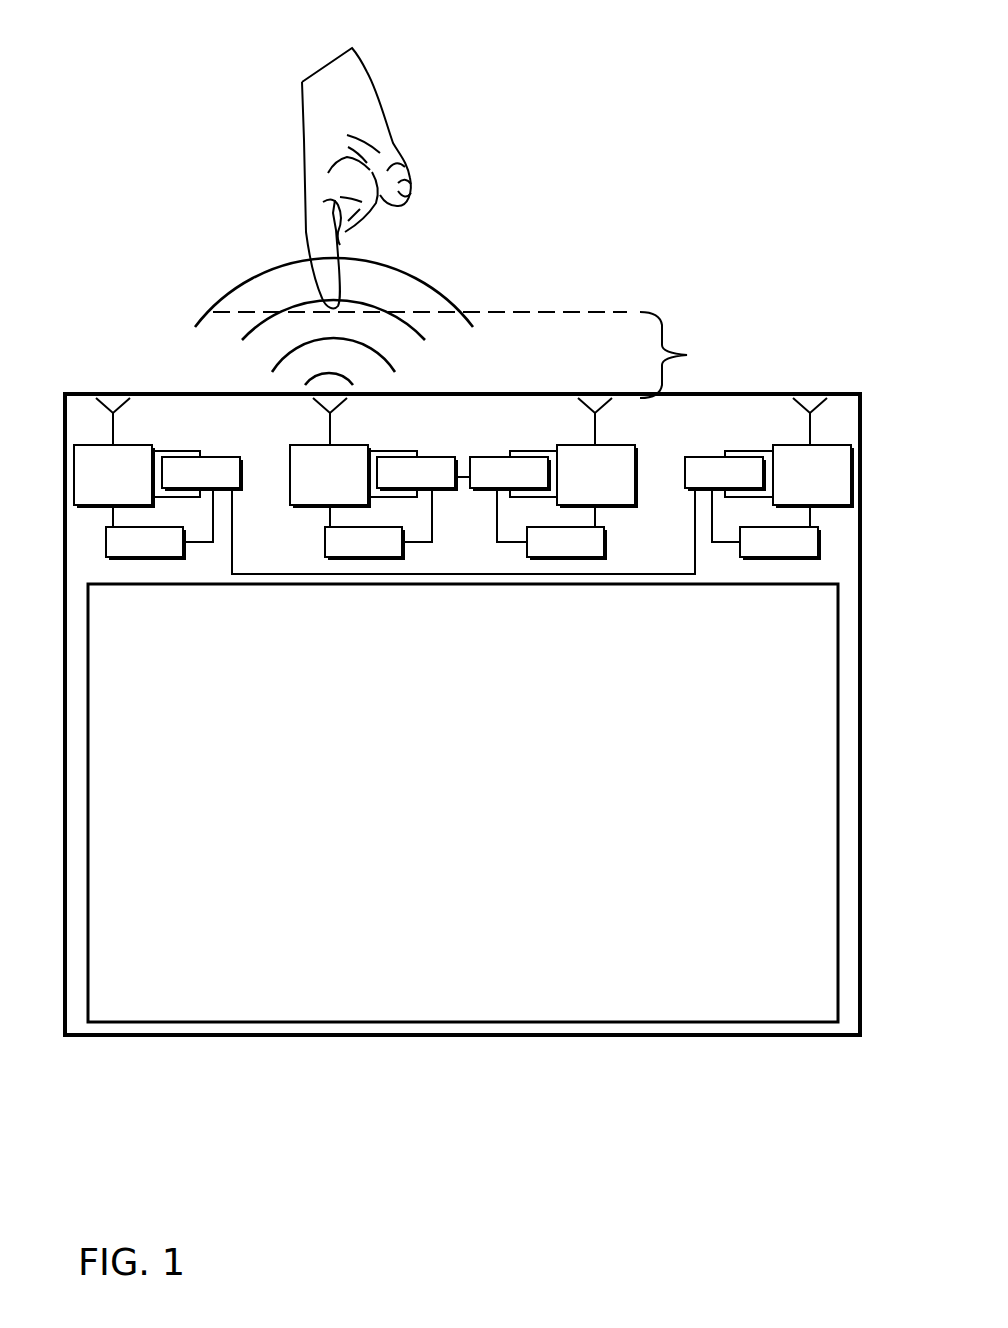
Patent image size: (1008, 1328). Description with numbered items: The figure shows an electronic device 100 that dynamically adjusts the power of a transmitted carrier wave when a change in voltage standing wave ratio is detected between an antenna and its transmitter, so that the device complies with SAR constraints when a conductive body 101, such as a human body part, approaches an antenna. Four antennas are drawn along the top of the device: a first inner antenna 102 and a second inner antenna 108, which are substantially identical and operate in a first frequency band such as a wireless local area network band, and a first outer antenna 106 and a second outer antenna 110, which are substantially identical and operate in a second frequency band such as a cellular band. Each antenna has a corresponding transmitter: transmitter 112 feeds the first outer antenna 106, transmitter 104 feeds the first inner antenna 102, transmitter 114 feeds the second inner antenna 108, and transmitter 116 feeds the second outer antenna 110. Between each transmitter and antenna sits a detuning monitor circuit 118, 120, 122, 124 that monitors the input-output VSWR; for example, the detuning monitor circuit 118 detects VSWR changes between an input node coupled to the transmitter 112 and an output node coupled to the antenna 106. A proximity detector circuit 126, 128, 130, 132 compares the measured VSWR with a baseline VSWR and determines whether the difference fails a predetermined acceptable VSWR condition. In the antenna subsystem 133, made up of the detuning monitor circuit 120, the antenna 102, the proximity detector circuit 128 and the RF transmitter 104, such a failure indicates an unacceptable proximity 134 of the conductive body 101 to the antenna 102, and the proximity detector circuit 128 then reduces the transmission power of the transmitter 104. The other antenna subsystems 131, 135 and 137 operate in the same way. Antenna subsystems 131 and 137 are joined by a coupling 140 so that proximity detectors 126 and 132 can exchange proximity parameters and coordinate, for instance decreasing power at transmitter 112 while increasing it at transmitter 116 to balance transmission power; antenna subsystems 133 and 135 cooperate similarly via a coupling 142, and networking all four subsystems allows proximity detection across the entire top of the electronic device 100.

The electronic device 100 is at (167, 220).
The user's hand/finger 101 is at (298, 173).
The first inner antenna 102 is at (330, 421).
The transmitter 104 is at (347, 551).
The first outer antenna 106 is at (112, 420).
The second inner antenna 108 is at (595, 420).
The second outer antenna 110 is at (810, 420).
The transmitter 112 is at (128, 551).
The transmitter 114 is at (549, 551).
The transmitter 116 is at (763, 551).
The detuning monitor circuit 118 is at (97, 484).
The detuning monitor circuit 120 is at (313, 484).
The detuning monitor circuit 122 is at (580, 484).
The detuning monitor circuit 124 is at (796, 484).
The proximity detector circuit 126 is at (185, 481).
The proximity detector circuit 128 is at (400, 481).
The proximity detector circuit 130 is at (493, 481).
The proximity detector circuit 132 is at (708, 481).
The antenna subsystem 131 is at (205, 560).
The antenna subsystem 133 is at (417, 555).
The unacceptable proximity 134 is at (702, 348).
The antenna subsystem 135 is at (620, 547).
The antenna subsystem 137 is at (728, 558).
The coupling 140 is at (353, 574).
The coupling 142 is at (463, 478).